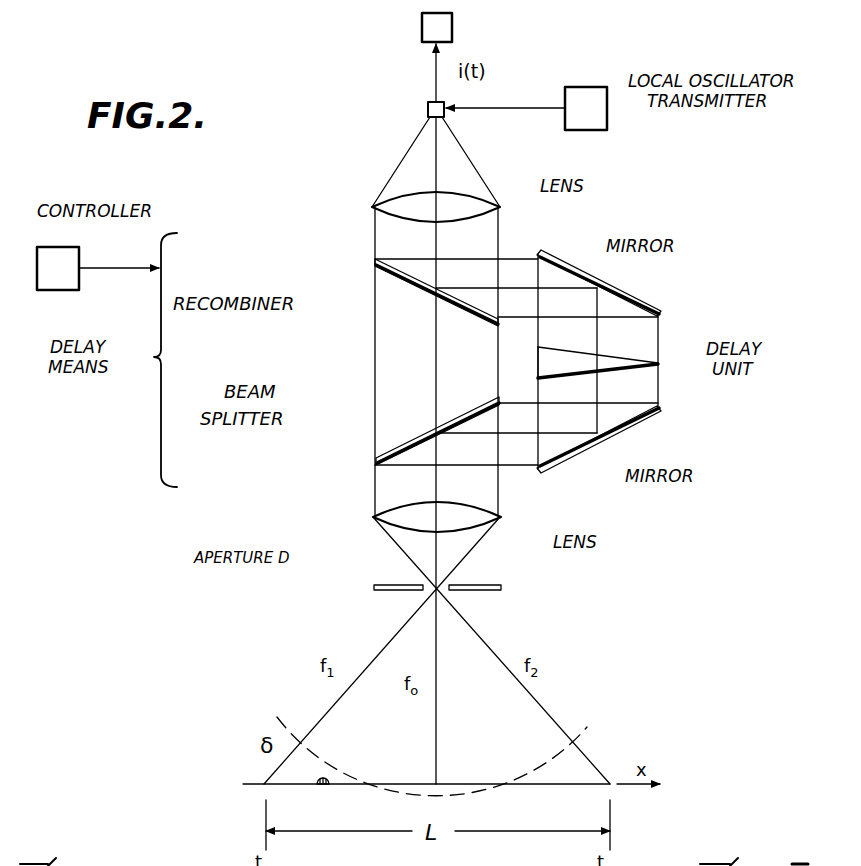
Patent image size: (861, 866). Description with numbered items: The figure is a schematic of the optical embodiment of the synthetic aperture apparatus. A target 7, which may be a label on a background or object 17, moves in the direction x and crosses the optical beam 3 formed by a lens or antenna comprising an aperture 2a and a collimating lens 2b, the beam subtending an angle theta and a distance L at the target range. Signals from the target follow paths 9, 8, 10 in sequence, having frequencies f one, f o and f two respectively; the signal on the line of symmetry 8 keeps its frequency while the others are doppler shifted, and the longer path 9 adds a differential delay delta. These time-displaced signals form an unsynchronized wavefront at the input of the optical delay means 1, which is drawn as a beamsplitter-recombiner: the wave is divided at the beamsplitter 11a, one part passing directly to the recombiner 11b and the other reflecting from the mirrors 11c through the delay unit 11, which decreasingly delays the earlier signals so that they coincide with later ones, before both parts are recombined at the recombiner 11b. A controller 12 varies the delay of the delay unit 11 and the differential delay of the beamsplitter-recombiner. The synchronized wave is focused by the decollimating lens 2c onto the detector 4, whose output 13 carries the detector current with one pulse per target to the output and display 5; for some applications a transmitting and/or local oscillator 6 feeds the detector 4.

The optical delay means 1 is at (161, 357).
The aperture 2a is at (422, 580).
The collimating lens 2b is at (468, 520).
The decollimating lens 2c is at (473, 205).
The optical beam 3 is at (380, 646).
The detector 4 is at (428, 110).
The output and display 5 is at (422, 26).
The transmitting and/or local oscillator 6 is at (526, 108).
The target 7 is at (326, 777).
The line of symmetry 8 is at (438, 721).
The first signal path 9 is at (331, 712).
The third signal path 10 is at (548, 712).
The delay unit 11 is at (625, 357).
The beamsplitter 11a is at (415, 440).
The recombiner 11b is at (415, 284).
The mirrors 11c is at (568, 269).
The controller 12 is at (63, 246).
The output 13 is at (436, 72).
The background or object 17 is at (555, 785).